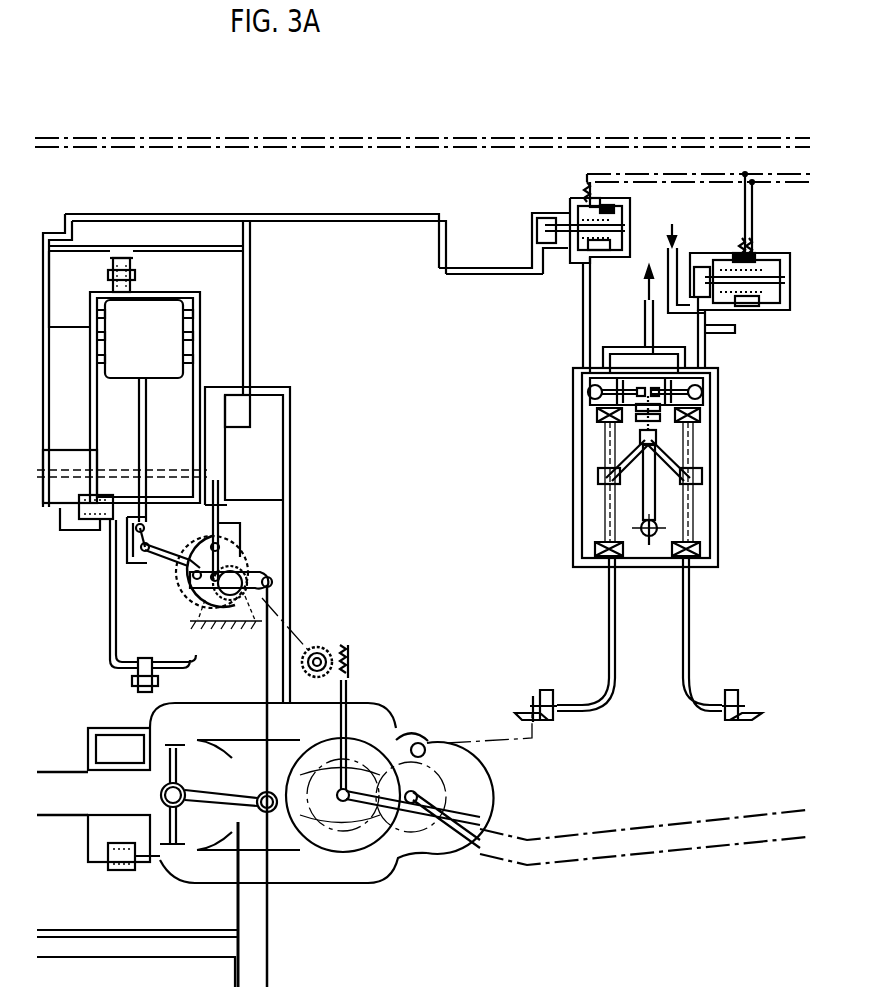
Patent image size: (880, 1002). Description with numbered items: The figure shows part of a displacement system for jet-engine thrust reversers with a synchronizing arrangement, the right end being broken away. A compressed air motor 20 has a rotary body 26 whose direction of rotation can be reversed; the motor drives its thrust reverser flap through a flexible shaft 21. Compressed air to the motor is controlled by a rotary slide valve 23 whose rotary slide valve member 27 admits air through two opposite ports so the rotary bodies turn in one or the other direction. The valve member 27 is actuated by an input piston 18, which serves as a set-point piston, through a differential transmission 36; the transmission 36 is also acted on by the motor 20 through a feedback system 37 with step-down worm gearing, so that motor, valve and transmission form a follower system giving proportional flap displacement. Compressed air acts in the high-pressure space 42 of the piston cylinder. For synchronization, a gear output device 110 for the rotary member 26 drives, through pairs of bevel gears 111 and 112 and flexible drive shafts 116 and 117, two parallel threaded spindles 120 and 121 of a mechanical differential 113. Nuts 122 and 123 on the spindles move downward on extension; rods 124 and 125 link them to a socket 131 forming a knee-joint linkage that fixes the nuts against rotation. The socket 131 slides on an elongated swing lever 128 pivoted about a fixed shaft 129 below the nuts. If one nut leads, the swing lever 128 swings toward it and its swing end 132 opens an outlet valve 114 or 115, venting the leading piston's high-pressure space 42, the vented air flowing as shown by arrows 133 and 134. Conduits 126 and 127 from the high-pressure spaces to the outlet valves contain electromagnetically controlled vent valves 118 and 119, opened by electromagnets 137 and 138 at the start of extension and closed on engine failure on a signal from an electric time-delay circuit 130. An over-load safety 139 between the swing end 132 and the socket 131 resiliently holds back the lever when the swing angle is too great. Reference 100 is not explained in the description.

The reference lines 100 is at (642, 147).
The electric time-delay circuit 130 is at (764, 182).
The vent valve 118 is at (563, 215).
The electromagnet 137 is at (615, 206).
The conduit 126 is at (588, 283).
The vent valve 119 is at (780, 262).
The electromagnet 138 is at (735, 262).
The arrow 133 is at (672, 224).
The conduit 127 is at (718, 335).
The arrow 134 is at (646, 293).
The swing end 132 is at (646, 392).
The mechanical differential 113 is at (571, 417).
The outlet valve 114 is at (590, 390).
The outlet valve 115 is at (700, 390).
The over-load safety 139 is at (662, 410).
The socket 131 is at (660, 434).
The rod 124 is at (625, 460).
The rod 125 is at (668, 458).
The nut 122 is at (600, 475).
The nut 123 is at (698, 475).
The swing lever 128 is at (678, 510).
The threaded spindle 120 is at (606, 530).
The threaded spindle 121 is at (688, 530).
The fixed shaft 129 is at (648, 538).
The flexible drive shaft 116 is at (608, 627).
The flexible drive shaft 117 is at (690, 627).
The pair of bevel gears 111 is at (548, 720).
The pair of bevel gears 112 is at (730, 720).
The gear output device 110 is at (408, 734).
The rotary body 26 is at (428, 847).
The compressed air motor 20 is at (420, 887).
The flexible shaft 21 is at (738, 822).
The rotary slide valve 23 is at (120, 763).
The rotary slide valve member 27 is at (170, 852).
The differential transmission 36 is at (262, 553).
The feedback system 37 is at (306, 647).
The high-pressure space 42 is at (105, 291).
The input piston 18 is at (190, 340).